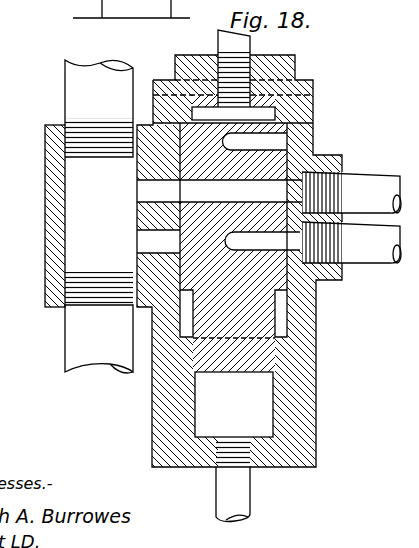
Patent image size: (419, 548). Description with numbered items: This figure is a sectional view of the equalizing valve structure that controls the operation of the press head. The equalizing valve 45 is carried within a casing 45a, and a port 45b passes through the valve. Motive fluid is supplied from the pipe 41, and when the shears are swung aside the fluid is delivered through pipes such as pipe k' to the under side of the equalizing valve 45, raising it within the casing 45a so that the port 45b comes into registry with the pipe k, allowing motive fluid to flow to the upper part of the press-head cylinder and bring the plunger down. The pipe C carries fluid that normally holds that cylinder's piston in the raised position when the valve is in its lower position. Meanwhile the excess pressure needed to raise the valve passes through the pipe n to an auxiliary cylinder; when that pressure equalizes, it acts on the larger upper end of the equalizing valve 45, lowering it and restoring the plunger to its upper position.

The pipe 41 is at (77, 103).
The pipe n is at (222, 40).
The port 45b is at (219, 216).
The equalizing valve 45 is at (247, 306).
The casing 45a is at (310, 366).
The pipe k is at (351, 174).
The pipe C is at (400, 265).
The pipe k' is at (251, 481).